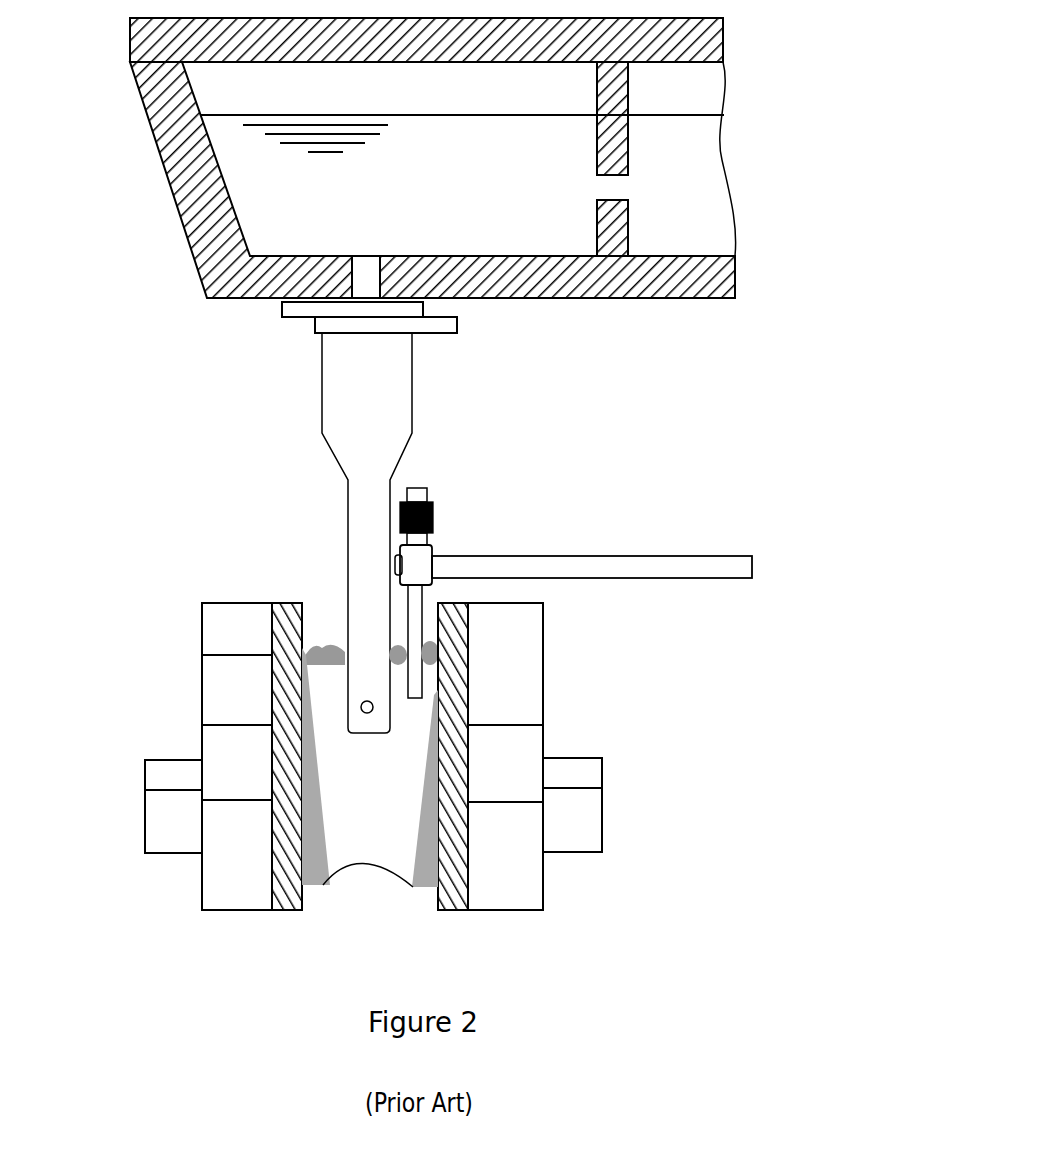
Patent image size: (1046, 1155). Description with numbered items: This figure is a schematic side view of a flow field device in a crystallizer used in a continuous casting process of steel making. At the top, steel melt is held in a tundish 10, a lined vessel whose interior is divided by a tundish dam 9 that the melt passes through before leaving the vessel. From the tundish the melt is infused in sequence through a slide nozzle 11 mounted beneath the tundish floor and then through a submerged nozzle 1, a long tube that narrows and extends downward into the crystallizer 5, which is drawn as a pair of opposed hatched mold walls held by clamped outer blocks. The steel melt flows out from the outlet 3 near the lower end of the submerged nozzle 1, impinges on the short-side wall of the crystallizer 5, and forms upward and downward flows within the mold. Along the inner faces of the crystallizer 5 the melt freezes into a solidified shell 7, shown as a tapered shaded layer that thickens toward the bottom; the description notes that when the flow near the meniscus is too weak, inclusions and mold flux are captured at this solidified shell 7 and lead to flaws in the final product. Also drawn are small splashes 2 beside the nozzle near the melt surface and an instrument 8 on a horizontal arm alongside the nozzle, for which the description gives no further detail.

The submerged nozzle 1 is at (372, 542).
The metal droplets / splashes 2 is at (340, 655).
The outlet 3 is at (361, 707).
The crystallizer 5 is at (278, 613).
The solidified shell 7 is at (277, 856).
The sensor 8 is at (440, 570).
The tundish dam 9 is at (628, 143).
The tundish 10 is at (485, 230).
The slide nozzle 11 is at (457, 328).